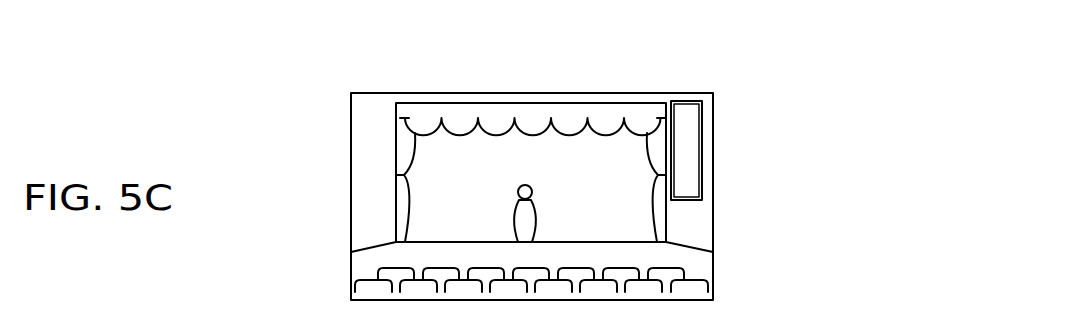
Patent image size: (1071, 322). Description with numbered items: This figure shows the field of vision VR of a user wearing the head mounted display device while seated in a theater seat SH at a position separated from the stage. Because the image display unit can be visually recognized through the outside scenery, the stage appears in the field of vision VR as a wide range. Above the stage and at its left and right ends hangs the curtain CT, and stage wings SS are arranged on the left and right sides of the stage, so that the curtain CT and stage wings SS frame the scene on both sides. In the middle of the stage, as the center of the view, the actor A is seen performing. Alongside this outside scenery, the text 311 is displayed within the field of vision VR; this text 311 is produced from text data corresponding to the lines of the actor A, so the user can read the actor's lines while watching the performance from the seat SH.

The actor A is at (511, 179).
The curtain CT is at (395, 215).
The field of vision VR is at (713, 110).
The text 311 is at (690, 120).
The stage wings SS is at (373, 230).
The seat SH is at (690, 272).